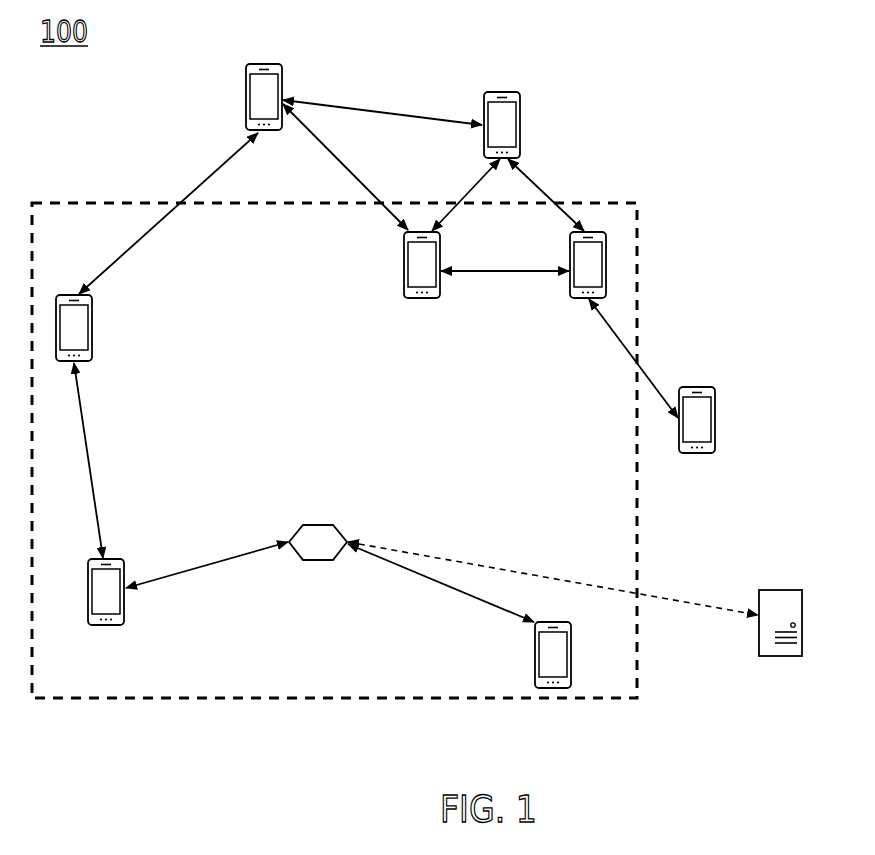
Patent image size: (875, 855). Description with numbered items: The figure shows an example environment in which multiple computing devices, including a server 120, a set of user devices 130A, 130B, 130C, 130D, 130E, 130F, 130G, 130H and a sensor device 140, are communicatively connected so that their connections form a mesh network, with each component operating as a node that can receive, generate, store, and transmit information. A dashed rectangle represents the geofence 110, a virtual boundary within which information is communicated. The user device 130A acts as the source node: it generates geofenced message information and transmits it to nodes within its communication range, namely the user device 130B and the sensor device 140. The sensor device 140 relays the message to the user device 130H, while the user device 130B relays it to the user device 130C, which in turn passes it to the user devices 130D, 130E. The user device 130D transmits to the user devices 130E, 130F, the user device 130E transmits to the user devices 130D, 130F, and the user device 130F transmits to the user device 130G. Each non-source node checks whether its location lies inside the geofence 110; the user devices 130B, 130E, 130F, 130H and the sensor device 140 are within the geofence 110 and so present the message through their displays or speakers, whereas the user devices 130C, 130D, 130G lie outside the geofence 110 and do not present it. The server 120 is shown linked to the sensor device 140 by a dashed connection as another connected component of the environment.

The geofence 110 is at (78, 203).
The server 120 is at (781, 656).
The user device 130A is at (118, 625).
The user device 130B is at (86, 361).
The user device 130C is at (273, 131).
The user device 130D is at (515, 157).
The user device 130E is at (432, 297).
The user device 130F is at (600, 297).
The user device 130G is at (710, 453).
The user device 130H is at (565, 690).
The sensor device 140 is at (304, 560).